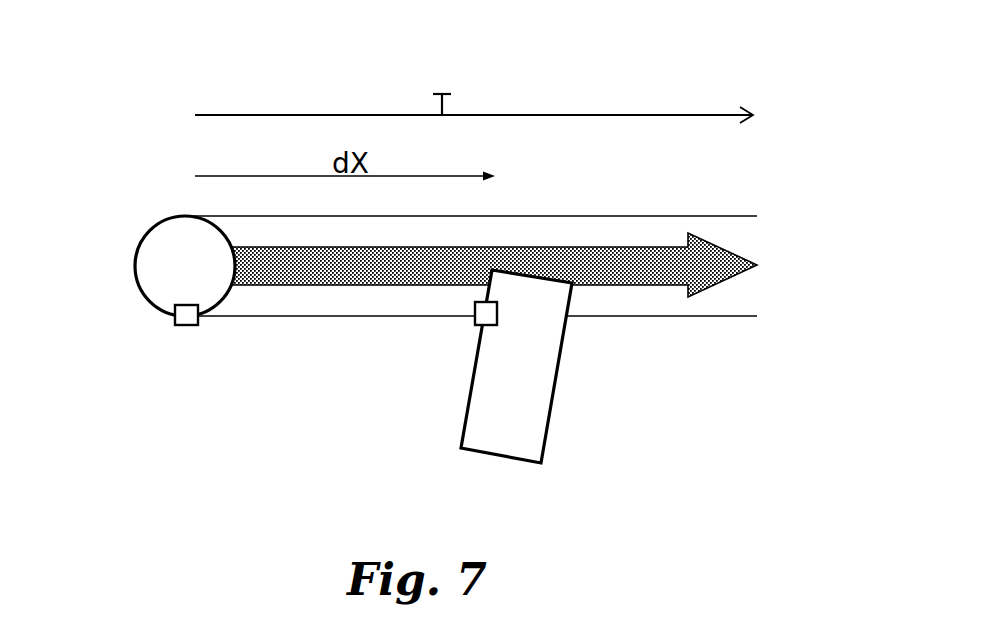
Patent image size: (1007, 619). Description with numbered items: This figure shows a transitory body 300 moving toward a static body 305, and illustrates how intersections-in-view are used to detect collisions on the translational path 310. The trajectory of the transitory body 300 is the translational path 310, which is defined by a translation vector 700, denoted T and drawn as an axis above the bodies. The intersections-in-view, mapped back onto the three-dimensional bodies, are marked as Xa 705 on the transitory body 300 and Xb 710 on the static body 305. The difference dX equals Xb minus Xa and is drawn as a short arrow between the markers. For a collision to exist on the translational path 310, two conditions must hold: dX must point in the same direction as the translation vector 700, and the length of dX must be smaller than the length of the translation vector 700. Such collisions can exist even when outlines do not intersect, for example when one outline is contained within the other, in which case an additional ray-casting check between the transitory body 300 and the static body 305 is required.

The translation vector 700 is at (448, 71).
The transitory body 300 is at (119, 264).
The static body 305 is at (562, 373).
The translational path 310 is at (766, 262).
The intersection-in-view Xa 705 is at (184, 331).
The intersection-in-view Xb 710 is at (466, 315).